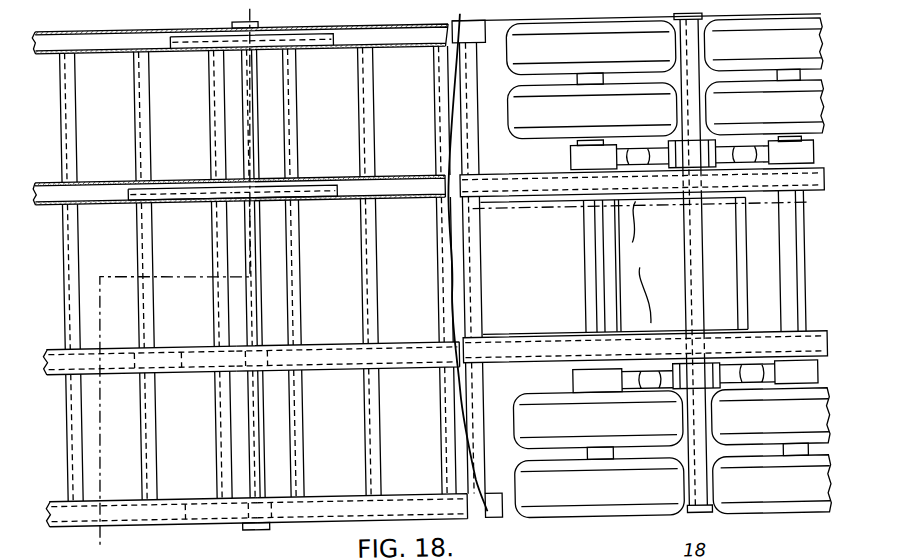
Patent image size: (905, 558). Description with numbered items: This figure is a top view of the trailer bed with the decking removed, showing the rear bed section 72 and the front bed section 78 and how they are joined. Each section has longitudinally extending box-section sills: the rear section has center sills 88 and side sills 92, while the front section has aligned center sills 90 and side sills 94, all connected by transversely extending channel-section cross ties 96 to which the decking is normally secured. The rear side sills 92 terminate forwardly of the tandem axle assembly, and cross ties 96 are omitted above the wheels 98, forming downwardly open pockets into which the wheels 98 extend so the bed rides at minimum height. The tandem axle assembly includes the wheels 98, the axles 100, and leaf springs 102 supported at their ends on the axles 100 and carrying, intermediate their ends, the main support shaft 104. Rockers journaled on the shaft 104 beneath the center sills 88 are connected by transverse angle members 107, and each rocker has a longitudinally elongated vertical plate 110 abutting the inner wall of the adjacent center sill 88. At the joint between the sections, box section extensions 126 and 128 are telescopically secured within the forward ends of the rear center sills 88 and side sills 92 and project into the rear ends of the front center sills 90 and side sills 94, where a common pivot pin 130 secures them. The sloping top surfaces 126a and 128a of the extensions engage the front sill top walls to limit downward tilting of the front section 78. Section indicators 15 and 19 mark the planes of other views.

The rear bed section 72 is at (407, 24).
The front bed section 78 is at (120, 25).
The rear section center sills 88 is at (388, 198).
The front section center sills 90 is at (101, 198).
The rear section side sills 92 is at (394, 48).
The front section side sills 94 is at (111, 47).
The cross ties 96 is at (213, 135).
The wheels 98 is at (579, 57).
The axles 100 is at (592, 296).
The leaf springs 102 is at (646, 155).
The main support shaft 104 is at (688, 254).
The transverse angle members 107 is at (616, 266).
The vertical plate 110 is at (646, 262).
The box section extension 126 is at (311, 189).
The top surface of extension 126a is at (161, 189).
The box section extension 128 is at (304, 37).
The top surface of extension 128a is at (191, 40).
The common pivot pin 130 is at (255, 94).
The section line 15- 15 is at (815, 184).
The section line 19- 19 is at (268, 9).